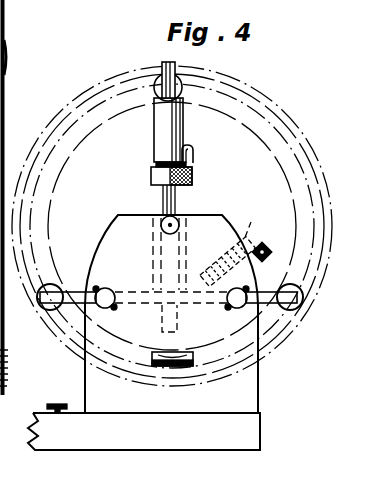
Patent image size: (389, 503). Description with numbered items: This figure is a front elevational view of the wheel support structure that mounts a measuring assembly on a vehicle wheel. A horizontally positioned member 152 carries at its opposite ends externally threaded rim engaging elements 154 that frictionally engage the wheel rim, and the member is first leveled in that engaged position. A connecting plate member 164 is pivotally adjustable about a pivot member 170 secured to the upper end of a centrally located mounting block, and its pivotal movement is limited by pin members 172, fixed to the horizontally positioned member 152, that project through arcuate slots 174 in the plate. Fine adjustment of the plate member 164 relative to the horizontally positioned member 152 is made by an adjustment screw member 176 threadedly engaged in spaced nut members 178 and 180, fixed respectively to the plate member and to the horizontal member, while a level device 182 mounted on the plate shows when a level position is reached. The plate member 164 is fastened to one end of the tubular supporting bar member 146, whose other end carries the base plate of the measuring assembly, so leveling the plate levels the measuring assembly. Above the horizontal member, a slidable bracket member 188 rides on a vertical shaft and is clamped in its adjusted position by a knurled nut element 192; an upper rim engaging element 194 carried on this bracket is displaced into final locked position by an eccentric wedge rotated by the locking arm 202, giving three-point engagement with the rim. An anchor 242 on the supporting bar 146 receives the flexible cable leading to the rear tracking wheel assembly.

The tubular supporting bar member 146 is at (58, 440).
The horizontally positioned member 152 is at (265, 300).
The rim engaging elements 154 is at (50, 284).
The connecting plate member 164 is at (247, 408).
The pivot member 170 is at (173, 223).
The pin members 172 is at (106, 288).
The arcuate slots 174 is at (110, 309).
The adjustment screw member 176 is at (264, 251).
The nut member 178 is at (264, 221).
The nut member 180 is at (222, 257).
The level device 182 is at (162, 368).
The slidable bracket member 188 is at (166, 130).
The knurled nut element 192 is at (189, 179).
The upper rim engaging element 194 is at (158, 80).
The locking arm 202 is at (191, 151).
The anchor 242 is at (53, 403).